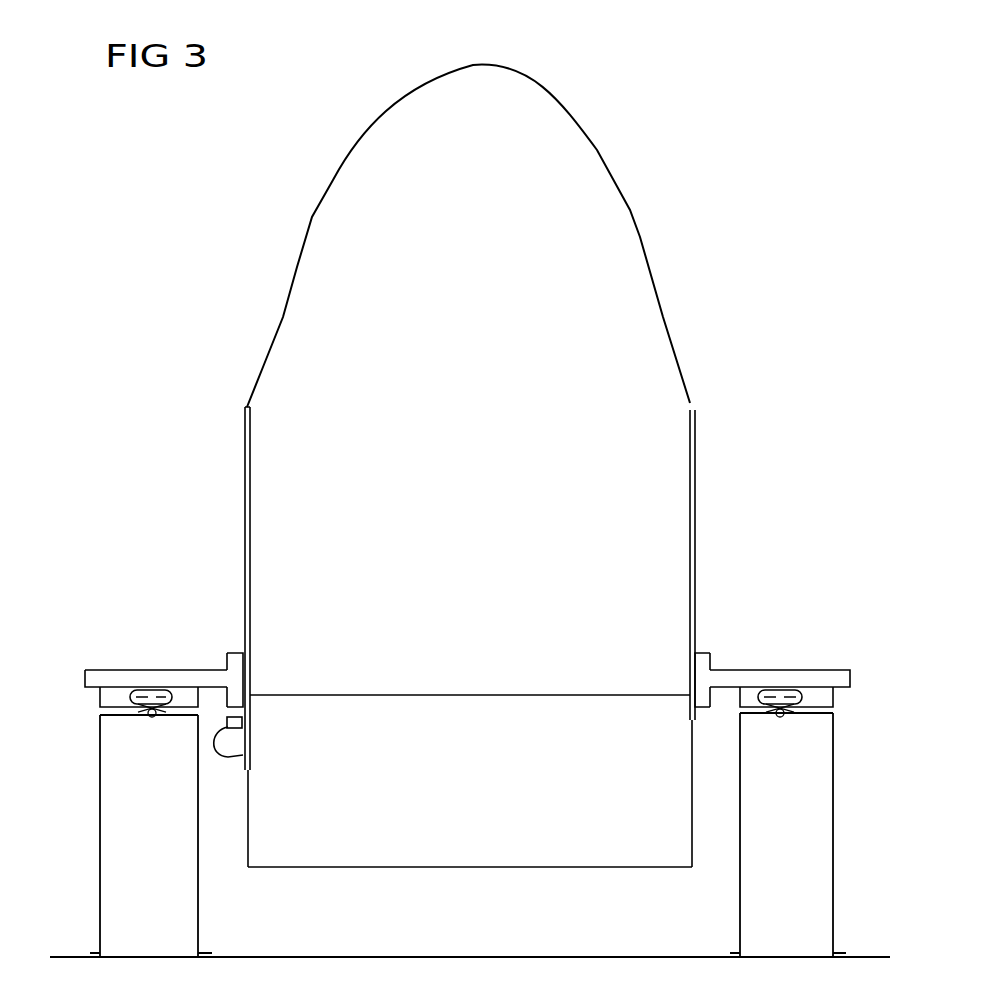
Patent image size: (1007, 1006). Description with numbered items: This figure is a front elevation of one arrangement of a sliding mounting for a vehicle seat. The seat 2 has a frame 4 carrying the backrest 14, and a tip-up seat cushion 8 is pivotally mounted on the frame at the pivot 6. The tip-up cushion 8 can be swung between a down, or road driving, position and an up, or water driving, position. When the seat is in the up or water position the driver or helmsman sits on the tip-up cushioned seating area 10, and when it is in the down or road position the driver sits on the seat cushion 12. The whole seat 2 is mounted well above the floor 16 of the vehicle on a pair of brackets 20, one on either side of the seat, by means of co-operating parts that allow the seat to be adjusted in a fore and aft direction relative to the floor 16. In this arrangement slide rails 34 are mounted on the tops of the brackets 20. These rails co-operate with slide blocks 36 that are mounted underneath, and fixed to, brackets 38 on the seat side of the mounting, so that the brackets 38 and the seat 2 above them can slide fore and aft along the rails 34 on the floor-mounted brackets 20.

The seat 2 is at (484, 491).
The frame 4 is at (698, 478).
The pivot 6 is at (250, 757).
The tip-up seat cushion 8 is at (247, 848).
The tip-up cushioned seating area 10 is at (476, 791).
The seat cushion 12 is at (486, 692).
The backrest 14 is at (478, 468).
The floor 16 is at (555, 957).
The bracket 20 is at (105, 806).
The slide rail 34 is at (150, 692).
The slide block 36 is at (113, 697).
The bracket 38 is at (178, 672).